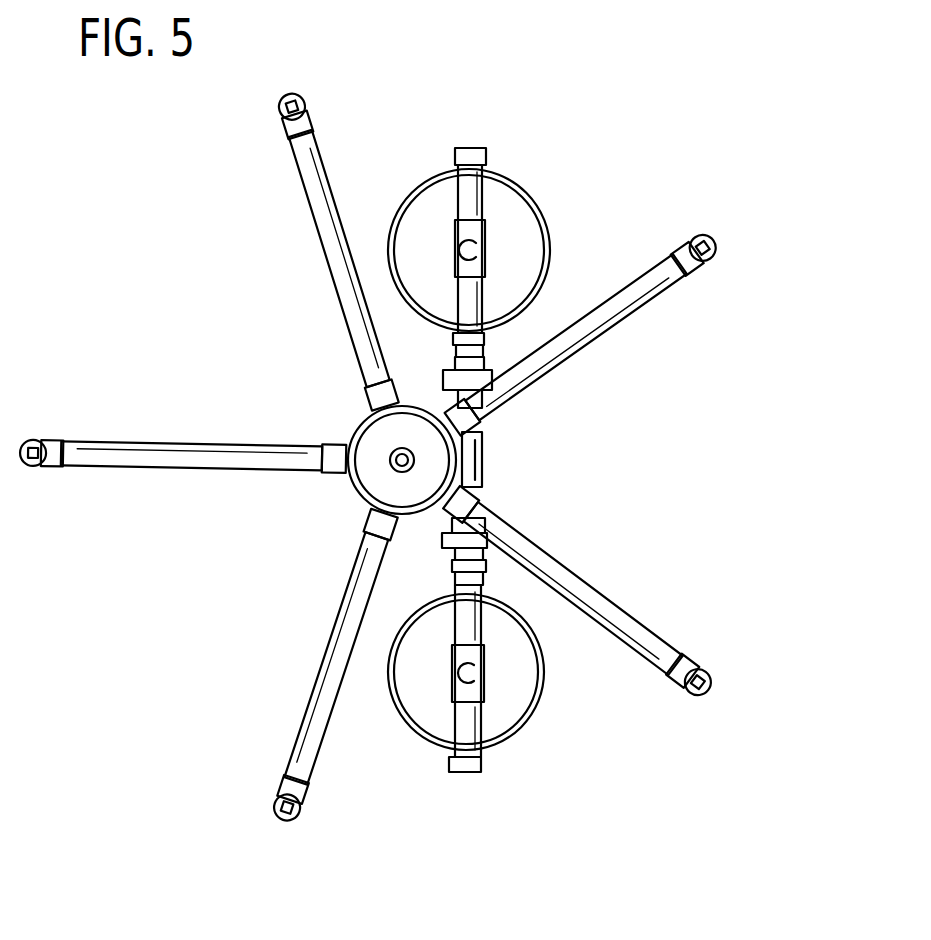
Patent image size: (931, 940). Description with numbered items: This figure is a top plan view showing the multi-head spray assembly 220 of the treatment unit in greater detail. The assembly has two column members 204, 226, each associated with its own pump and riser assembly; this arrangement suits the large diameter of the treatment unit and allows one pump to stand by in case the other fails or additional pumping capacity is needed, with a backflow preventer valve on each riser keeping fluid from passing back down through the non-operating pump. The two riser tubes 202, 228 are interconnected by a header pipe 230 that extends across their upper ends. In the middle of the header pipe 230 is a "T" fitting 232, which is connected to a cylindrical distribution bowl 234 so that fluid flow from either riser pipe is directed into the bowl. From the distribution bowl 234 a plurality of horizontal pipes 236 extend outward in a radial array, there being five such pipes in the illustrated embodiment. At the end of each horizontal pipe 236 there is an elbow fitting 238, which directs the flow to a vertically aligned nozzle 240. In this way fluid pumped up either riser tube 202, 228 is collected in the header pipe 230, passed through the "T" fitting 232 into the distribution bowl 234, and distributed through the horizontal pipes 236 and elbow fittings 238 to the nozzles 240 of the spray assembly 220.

The riser tube 202 is at (487, 690).
The column member 204 is at (545, 690).
The multi-head spray assembly 220 is at (150, 250).
The column member 226 is at (515, 192).
The riser tube 228 is at (488, 255).
The header pipe 230 is at (478, 630).
The "T" fitting 232 is at (483, 462).
The cylindrical distribution bowl 234 is at (370, 485).
The horizontal pipes 236 is at (362, 333).
The elbow fitting 238 is at (288, 130).
The nozzle 240 is at (280, 110).